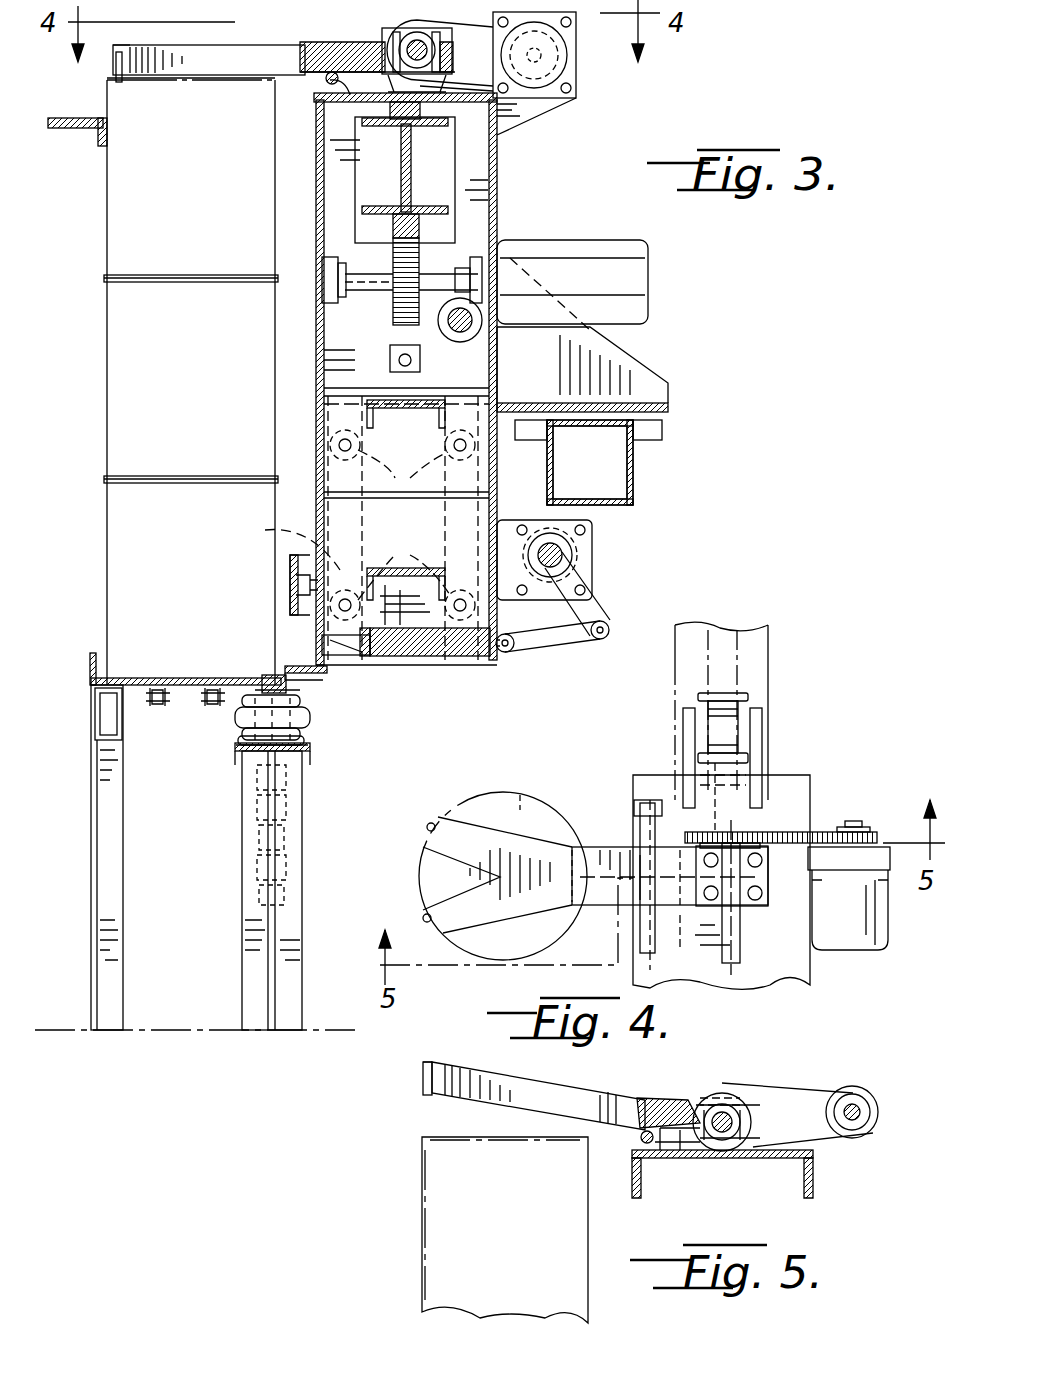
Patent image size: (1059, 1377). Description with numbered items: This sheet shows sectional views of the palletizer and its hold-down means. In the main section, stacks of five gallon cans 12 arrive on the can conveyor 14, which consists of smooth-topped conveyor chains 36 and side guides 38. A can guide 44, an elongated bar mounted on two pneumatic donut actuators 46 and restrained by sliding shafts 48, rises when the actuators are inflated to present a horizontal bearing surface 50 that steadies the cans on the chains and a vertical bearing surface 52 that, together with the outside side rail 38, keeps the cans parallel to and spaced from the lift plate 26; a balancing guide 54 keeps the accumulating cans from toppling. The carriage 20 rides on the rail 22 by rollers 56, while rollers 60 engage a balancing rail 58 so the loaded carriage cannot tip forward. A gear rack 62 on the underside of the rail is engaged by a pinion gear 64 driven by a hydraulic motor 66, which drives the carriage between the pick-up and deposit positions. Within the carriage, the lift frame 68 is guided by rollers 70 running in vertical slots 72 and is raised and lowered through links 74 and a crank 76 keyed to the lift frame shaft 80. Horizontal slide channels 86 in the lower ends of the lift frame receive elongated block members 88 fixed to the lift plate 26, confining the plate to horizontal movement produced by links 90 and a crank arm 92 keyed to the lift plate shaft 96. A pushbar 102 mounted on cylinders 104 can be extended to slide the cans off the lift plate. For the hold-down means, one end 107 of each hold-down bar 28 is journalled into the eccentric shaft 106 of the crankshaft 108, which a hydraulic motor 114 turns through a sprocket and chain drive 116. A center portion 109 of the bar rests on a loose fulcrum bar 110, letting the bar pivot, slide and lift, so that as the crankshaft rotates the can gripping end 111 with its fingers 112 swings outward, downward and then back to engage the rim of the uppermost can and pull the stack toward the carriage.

In FIG. 3, the cans 12 is at (205, 392).
In FIG. 4, the cans 12 is at (495, 790).
In FIG. 5, the cans 12 is at (512, 1246).
In FIG. 3, the can conveyor 14 is at (84, 640).
In FIG. 3, the carriage 20 is at (298, 238).
In FIG. 4, the carriage 20 is at (812, 760).
In FIG. 5, the carriage 20 is at (824, 1180).
In FIG. 3, the rail 22 is at (412, 185).
In FIG. 4, the rail 22 is at (770, 650).
In FIG. 3, the lift plate 26 is at (302, 660).
In FIG. 3, the hold-down bars 28 is at (220, 50).
In FIG. 4, the hold-down bars 28 is at (598, 845).
In FIG. 5, the hold-down bars 28 is at (560, 1095).
In FIG. 3, the conveyor chains 36 is at (215, 680).
In FIG. 3, the side guides 38 is at (88, 690).
In FIG. 3, the can guide 44 is at (308, 708).
In FIG. 3, the pneumatic actuators 46 is at (240, 715).
In FIG. 3, the sliding shafts 48 is at (250, 765).
In FIG. 3, the horizontal bearing surface 50 is at (270, 675).
In FIG. 3, the vertical bearing surface 52 is at (300, 690).
In FIG. 3, the balancing guide 54 is at (82, 118).
In FIG. 4, the rollers 56 is at (752, 705).
In FIG. 3, the balancing rail 58 is at (632, 460).
In FIG. 3, the rollers 60 is at (556, 462).
In FIG. 3, the gear rack 62 is at (420, 230).
In FIG. 3, the pinion gear 64 is at (480, 270).
In FIG. 3, the hydraulic motor 66 is at (640, 275).
In FIG. 3, the lift frame 68 is at (340, 485).
In FIG. 3, the rollers 70 is at (402, 525).
In FIG. 3, the vertical slots 72 is at (455, 500).
In FIG. 3, the links 74 is at (392, 350).
In FIG. 3, the crank 76 is at (465, 345).
In FIG. 3, the lift frame shaft 80 is at (484, 322).
In FIG. 3, the slide channels 86 is at (370, 660).
In FIG. 3, the elongated block members 88 is at (430, 655).
In FIG. 3, the links 90 is at (540, 655).
In FIG. 3, the crank arm 92 is at (600, 600).
In FIG. 3, the lift plate shaft 96 is at (572, 555).
In FIG. 3, the pushbar 102 is at (290, 575).
In FIG. 3, the cylinders 104 is at (279, 540).
In FIG. 3, the eccentric shaft 106 is at (398, 36).
In FIG. 4, the eccentric shaft 106 is at (740, 950).
In FIG. 5, the eccentric shaft 106 is at (720, 1145).
In FIG. 3, the end of hold-down bar 107 is at (425, 28).
In FIG. 4, the end of hold-down bar 107 is at (752, 905).
In FIG. 5, the end of hold-down bar 107 is at (760, 1118).
In FIG. 4, the crankshaft 108 is at (770, 825).
In FIG. 5, the crankshaft 108 is at (712, 1095).
In FIG. 3, the center portion of hold-down bar 109 is at (325, 80).
In FIG. 5, the center portion of hold-down bar 109 is at (647, 1130).
In FIG. 3, the loose fulcrum bar 110 is at (330, 84).
In FIG. 4, the loose fulcrum bar 110 is at (655, 945).
In FIG. 5, the loose fulcrum bar 110 is at (652, 1155).
In FIG. 3, the can gripping end 111 is at (125, 52).
In FIG. 4, the can gripping end 111 is at (445, 850).
In FIG. 5, the can gripping end 111 is at (432, 1062).
In FIG. 3, the fingers 112 is at (124, 82).
In FIG. 4, the fingers 112 is at (428, 822).
In FIG. 5, the fingers 112 is at (423, 1092).
In FIG. 3, the hydraulic motor 114 is at (578, 65).
In FIG. 4, the hydraulic motor 114 is at (888, 920).
In FIG. 3, the sprocket and chain drive 116 is at (540, 125).
In FIG. 4, the sprocket and chain drive 116 is at (830, 830).
In FIG. 5, the sprocket and chain drive 116 is at (800, 1085).